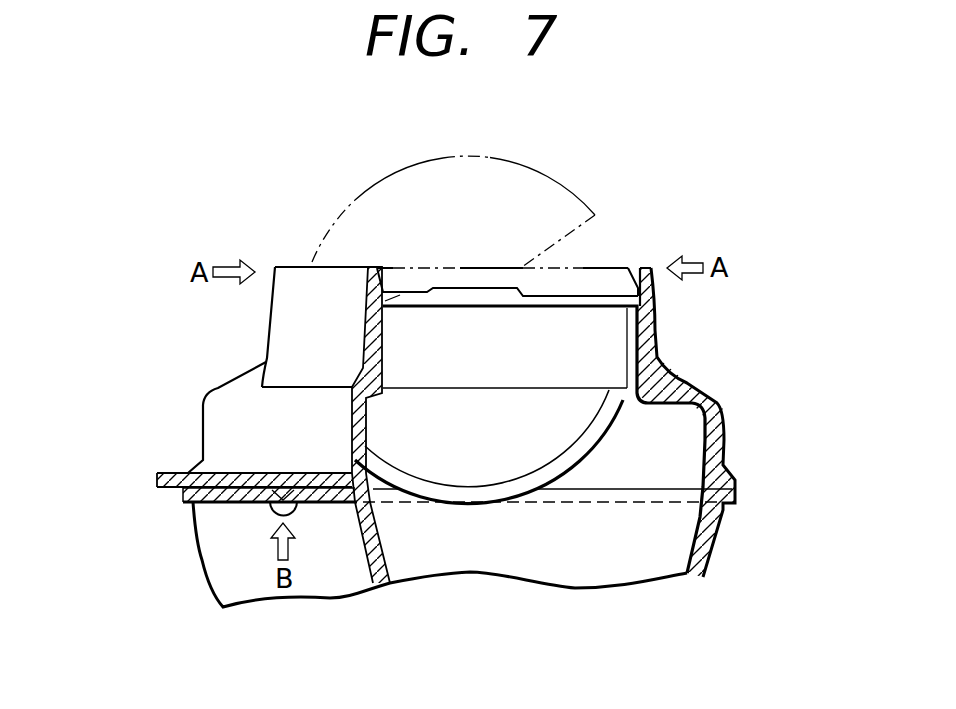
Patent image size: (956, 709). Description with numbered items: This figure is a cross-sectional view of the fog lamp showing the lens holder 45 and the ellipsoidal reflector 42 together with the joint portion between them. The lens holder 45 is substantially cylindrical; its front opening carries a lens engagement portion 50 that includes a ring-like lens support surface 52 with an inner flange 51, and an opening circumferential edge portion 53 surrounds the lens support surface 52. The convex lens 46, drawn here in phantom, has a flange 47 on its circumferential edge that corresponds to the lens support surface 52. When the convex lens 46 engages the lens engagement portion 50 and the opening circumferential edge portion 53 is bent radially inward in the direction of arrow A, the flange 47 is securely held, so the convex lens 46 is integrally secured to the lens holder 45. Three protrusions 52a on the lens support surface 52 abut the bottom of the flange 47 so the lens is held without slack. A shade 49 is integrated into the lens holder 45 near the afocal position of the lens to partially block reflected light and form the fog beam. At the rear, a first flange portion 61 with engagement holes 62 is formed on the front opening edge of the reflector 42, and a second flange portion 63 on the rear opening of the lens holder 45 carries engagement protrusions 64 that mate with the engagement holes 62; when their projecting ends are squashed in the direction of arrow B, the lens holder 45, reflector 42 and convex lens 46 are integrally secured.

The ellipsoidal reflector 42 is at (198, 567).
The lens holder 45 is at (700, 361).
The convex lens 46 is at (490, 153).
The flange 47 is at (543, 233).
The shade 49 is at (512, 485).
The lens engagement portion 50 is at (627, 287).
The inner flange 51 is at (527, 224).
The lens support surface 52 is at (550, 300).
The protrusions 52a is at (462, 267).
The opening circumferential edge portion 53 is at (320, 265).
The first flange portion 61 is at (183, 493).
The engagement holes 62 is at (277, 507).
The second flange portion 63 is at (157, 475).
The engagement protrusions 64 is at (297, 508).